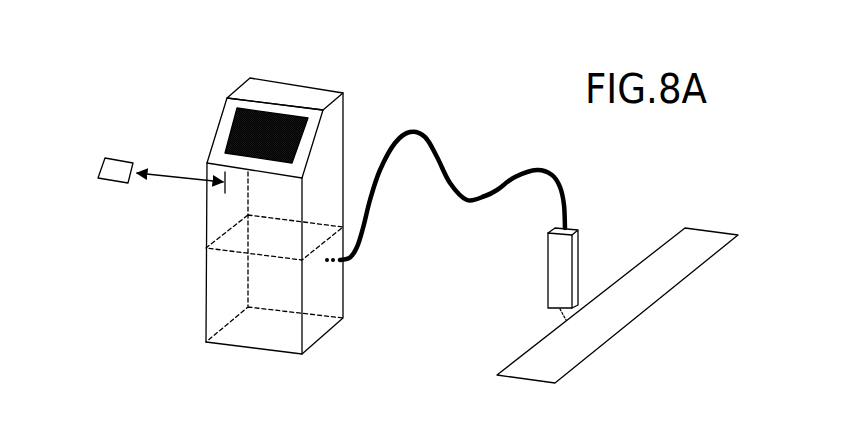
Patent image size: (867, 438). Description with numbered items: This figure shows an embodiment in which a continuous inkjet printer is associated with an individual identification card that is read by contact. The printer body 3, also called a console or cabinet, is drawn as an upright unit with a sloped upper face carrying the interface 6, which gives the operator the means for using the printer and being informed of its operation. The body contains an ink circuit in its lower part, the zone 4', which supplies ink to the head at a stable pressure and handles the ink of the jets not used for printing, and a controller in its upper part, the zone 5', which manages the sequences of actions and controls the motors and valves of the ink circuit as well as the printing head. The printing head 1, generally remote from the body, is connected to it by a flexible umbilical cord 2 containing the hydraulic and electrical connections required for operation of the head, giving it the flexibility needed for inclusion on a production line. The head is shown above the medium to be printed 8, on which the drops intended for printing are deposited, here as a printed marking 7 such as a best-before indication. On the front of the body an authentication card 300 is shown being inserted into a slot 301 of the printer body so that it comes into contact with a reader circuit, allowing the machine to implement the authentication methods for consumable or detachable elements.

The printer body 3 is at (322, 70).
The interface 6 is at (240, 133).
The slot 301 is at (225, 193).
The authentication card 300 is at (115, 178).
The zone of the controller 5' is at (193, 226).
The zone of the ink circuit 4' is at (303, 286).
The flexible umbilical cord 2 is at (488, 197).
The printing head 1 is at (558, 252).
The printed information (best before) 7 is at (562, 334).
The medium to be printed 8 is at (693, 237).